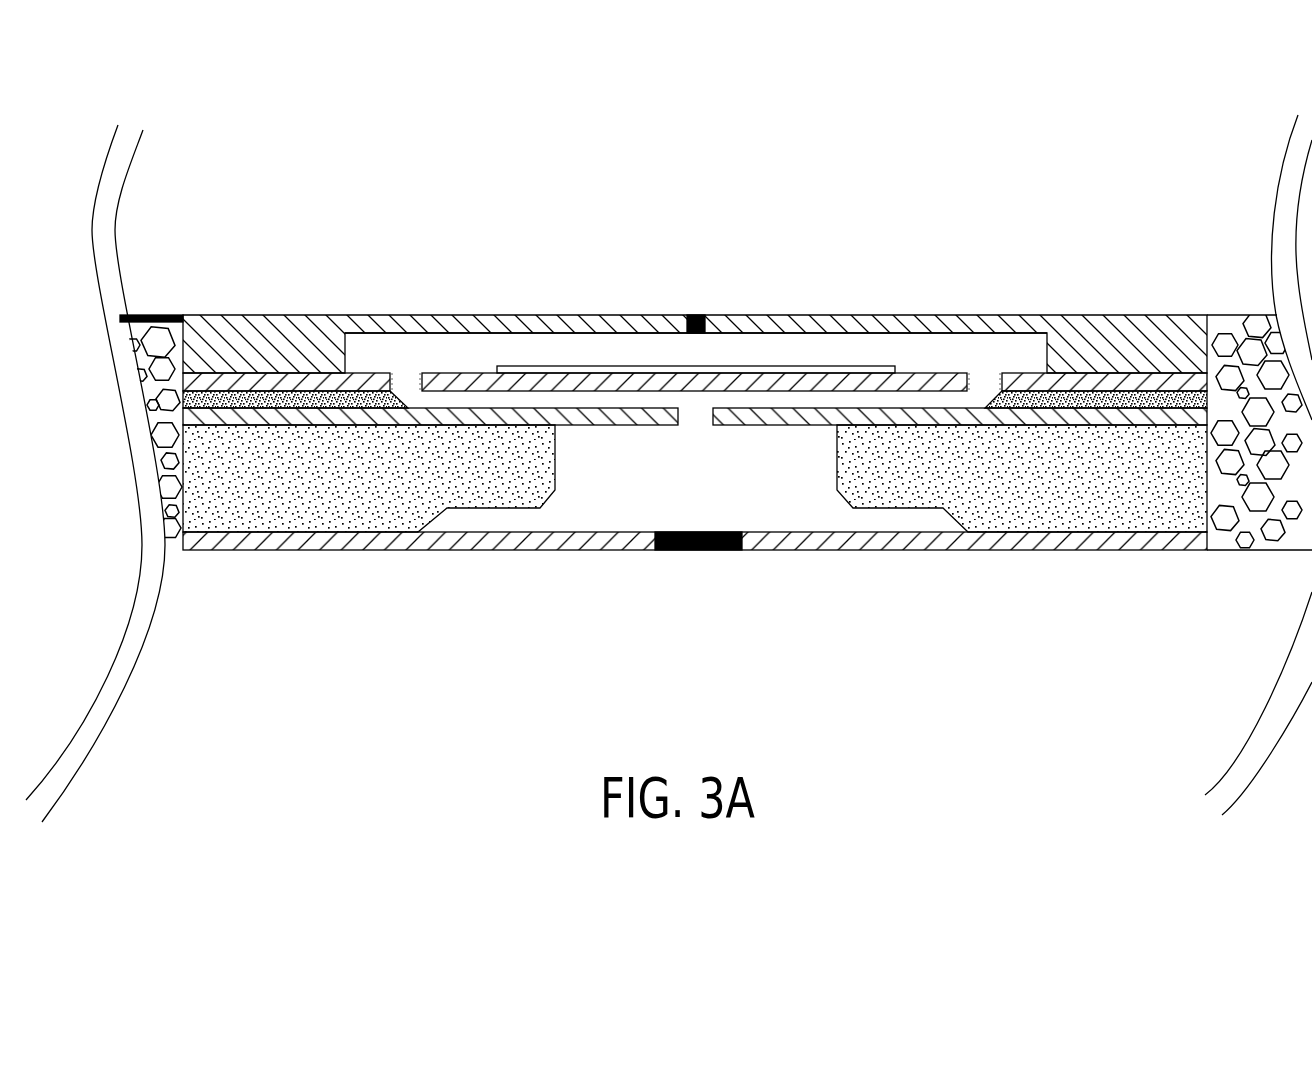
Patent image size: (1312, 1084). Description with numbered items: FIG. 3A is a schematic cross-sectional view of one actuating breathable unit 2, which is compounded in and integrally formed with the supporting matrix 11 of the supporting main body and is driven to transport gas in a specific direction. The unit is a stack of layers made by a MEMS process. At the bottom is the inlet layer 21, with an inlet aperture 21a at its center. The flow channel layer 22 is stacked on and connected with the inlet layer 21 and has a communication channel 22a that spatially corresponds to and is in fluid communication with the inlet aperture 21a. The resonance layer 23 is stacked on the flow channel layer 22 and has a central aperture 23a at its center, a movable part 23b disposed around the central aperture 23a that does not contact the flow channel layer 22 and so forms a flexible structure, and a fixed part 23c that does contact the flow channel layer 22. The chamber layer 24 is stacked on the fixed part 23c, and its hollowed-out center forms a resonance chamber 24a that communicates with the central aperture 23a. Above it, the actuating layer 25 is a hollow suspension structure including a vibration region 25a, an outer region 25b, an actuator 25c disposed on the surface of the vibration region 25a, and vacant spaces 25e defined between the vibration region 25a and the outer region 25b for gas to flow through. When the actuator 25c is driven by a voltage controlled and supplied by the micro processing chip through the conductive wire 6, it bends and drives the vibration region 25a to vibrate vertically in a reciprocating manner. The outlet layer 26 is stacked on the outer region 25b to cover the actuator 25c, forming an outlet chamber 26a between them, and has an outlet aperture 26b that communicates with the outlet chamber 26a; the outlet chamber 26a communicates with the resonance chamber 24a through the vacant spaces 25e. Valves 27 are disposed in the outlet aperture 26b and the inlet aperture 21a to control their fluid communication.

The actuating breathable unit 2 is at (1294, 77).
The supporting matrix 11 is at (160, 330).
The conductive wire 6 is at (181, 322).
The inlet layer 21 is at (203, 540).
The inlet aperture 21a is at (700, 550).
The flow channel layer 22 is at (203, 490).
The communication channel 22a is at (625, 490).
The resonance layer 23 is at (203, 418).
The central aperture 23a is at (690, 430).
The movable part 23b is at (610, 415).
The fixed part 23c is at (352, 422).
The chamber layer 24 is at (203, 400).
The resonance chamber 24a is at (765, 400).
The actuating layer 25 is at (203, 382).
The vibration region 25a is at (905, 378).
The outer region 25b is at (310, 342).
The actuator 25c is at (497, 366).
The vacant spaces 25e is at (400, 386).
The outlet layer 26 is at (203, 354).
The outlet chamber 26a is at (572, 355).
The outlet aperture 26b is at (697, 315).
The valve 27 is at (690, 315).